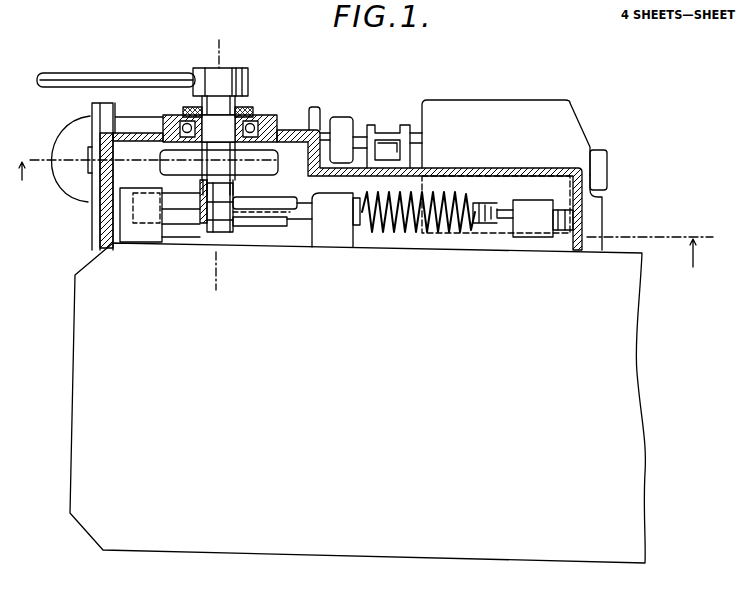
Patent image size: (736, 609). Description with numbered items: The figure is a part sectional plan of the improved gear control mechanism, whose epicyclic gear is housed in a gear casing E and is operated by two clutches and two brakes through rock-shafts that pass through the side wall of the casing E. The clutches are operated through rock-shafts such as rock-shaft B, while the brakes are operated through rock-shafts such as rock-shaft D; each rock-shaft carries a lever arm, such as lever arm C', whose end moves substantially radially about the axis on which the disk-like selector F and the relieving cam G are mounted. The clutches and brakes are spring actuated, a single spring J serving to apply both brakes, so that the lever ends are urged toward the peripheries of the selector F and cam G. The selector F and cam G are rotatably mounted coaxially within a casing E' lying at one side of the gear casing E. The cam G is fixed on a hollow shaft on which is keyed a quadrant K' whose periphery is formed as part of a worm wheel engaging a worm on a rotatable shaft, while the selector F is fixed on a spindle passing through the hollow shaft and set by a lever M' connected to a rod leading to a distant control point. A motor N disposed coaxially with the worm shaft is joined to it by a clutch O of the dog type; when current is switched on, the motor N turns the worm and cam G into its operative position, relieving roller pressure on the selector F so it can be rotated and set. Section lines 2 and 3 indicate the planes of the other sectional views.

The gear casing E is at (357, 403).
The casing E' is at (107, 133).
The lever M' is at (245, 66).
The quadrant K' is at (372, 153).
The lever arm C' is at (256, 221).
The rock-shaft B is at (130, 212).
The relieving cam G is at (180, 202).
The selector F is at (188, 217).
The spring J is at (410, 235).
The rock-shaft D is at (528, 223).
The clutch O is at (390, 127).
The motor N is at (514, 175).
The section line 2- 2 is at (366, 203).
The section line 3- 3 is at (224, 158).